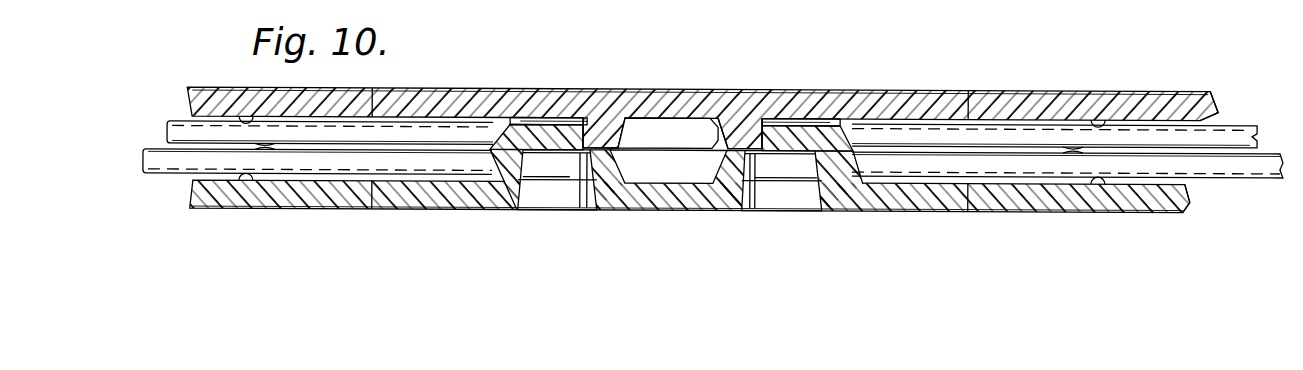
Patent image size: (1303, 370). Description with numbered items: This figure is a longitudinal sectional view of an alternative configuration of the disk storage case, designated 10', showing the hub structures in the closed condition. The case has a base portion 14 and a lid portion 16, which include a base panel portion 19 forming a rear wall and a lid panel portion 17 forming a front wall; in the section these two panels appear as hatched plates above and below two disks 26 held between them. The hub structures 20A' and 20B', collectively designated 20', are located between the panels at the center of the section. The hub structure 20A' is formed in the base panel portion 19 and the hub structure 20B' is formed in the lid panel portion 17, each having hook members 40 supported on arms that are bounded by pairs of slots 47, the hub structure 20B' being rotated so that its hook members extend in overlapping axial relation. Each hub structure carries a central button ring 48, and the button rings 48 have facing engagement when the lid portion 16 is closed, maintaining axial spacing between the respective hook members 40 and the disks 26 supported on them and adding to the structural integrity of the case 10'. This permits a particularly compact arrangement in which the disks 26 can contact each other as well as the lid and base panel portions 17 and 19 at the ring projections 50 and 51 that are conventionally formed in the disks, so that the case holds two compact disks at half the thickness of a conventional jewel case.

The alternative case configuration 10' is at (717, 120).
The base portion 14 is at (721, 183).
The lid portion 16 is at (727, 97).
The lid panel portion 17 is at (1215, 96).
The base panel portion 19 is at (1187, 183).
The hub structures 20' is at (677, 116).
The hub structure 20A' is at (668, 167).
The hub structure 20B' is at (668, 133).
The disks 26 is at (717, 137).
The hook members 40 is at (540, 90).
The slots 47 is at (958, 81).
The button ring 48 is at (755, 91).
The ring projection 50 is at (1112, 88).
The ring projection 51 is at (1088, 149).